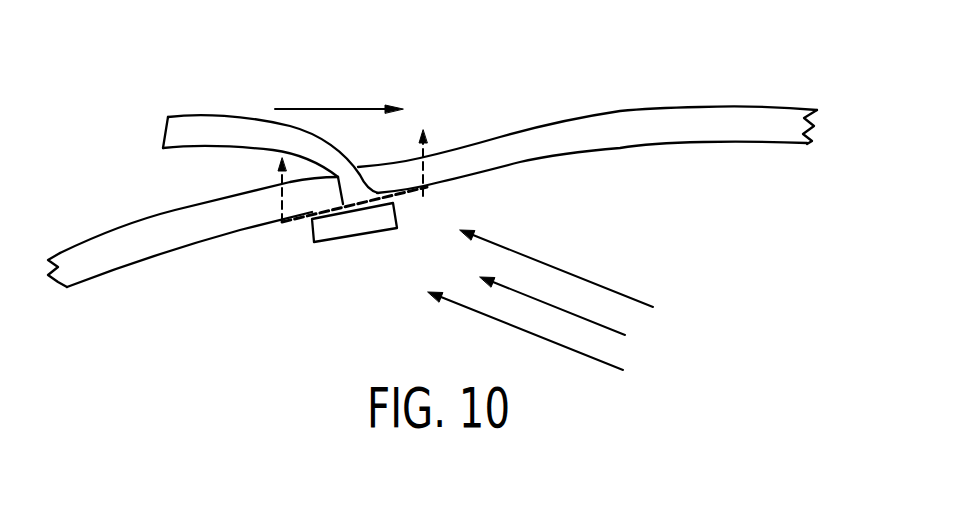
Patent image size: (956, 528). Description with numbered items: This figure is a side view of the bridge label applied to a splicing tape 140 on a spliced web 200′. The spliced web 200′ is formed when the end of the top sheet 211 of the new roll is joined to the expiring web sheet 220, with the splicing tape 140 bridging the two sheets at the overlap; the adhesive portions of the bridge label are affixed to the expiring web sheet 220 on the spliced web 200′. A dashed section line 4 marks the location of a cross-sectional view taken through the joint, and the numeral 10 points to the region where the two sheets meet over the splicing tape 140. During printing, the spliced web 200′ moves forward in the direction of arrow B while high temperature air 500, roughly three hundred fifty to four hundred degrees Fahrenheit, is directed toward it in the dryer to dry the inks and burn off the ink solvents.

The section line 4- 4 is at (350, 155).
The bonded joint / adhesive layer 10 is at (370, 190).
The splicing tape 140 is at (358, 233).
The spliced web 200′ is at (620, 178).
The top sheet 211 is at (195, 223).
The expiring web sheet 220 is at (575, 128).
The air 500 is at (630, 338).
The direction of arrow B is at (337, 107).